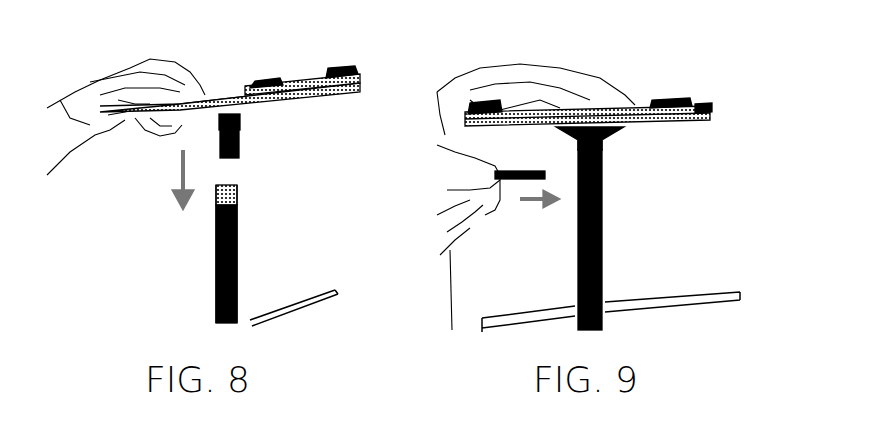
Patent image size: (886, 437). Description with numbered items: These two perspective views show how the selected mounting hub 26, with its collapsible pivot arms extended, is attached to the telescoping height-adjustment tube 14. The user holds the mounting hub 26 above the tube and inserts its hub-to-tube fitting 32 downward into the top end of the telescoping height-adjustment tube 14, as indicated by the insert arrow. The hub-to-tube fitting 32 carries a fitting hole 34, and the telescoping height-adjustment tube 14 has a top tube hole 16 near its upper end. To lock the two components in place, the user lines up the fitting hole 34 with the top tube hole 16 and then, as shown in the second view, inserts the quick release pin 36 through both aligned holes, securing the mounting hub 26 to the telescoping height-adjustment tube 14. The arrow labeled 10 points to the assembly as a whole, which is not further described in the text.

In FIG. 8, the tool/assembly direction arrow 10 is at (290, 242).
In FIG. 9, the tool/assembly direction arrow 10 is at (643, 251).
In FIG. 8, the telescoping height-adjustment tube 14 is at (215, 308).
In FIG. 9, the telescoping height-adjustment tube 14 is at (577, 292).
In FIG. 8, the top tube hole 16 is at (230, 202).
In FIG. 9, the top tube hole 16 is at (586, 168).
In FIG. 8, the mounting hub 26 is at (219, 96).
In FIG. 9, the mounting hub 26 is at (612, 128).
In FIG. 8, the hub-to-tube fitting 32 is at (241, 127).
In FIG. 8, the fitting hole 34 is at (238, 148).
In FIG. 9, the fitting hole 34 is at (590, 145).
In FIG. 9, the quick release pin 36 is at (538, 179).